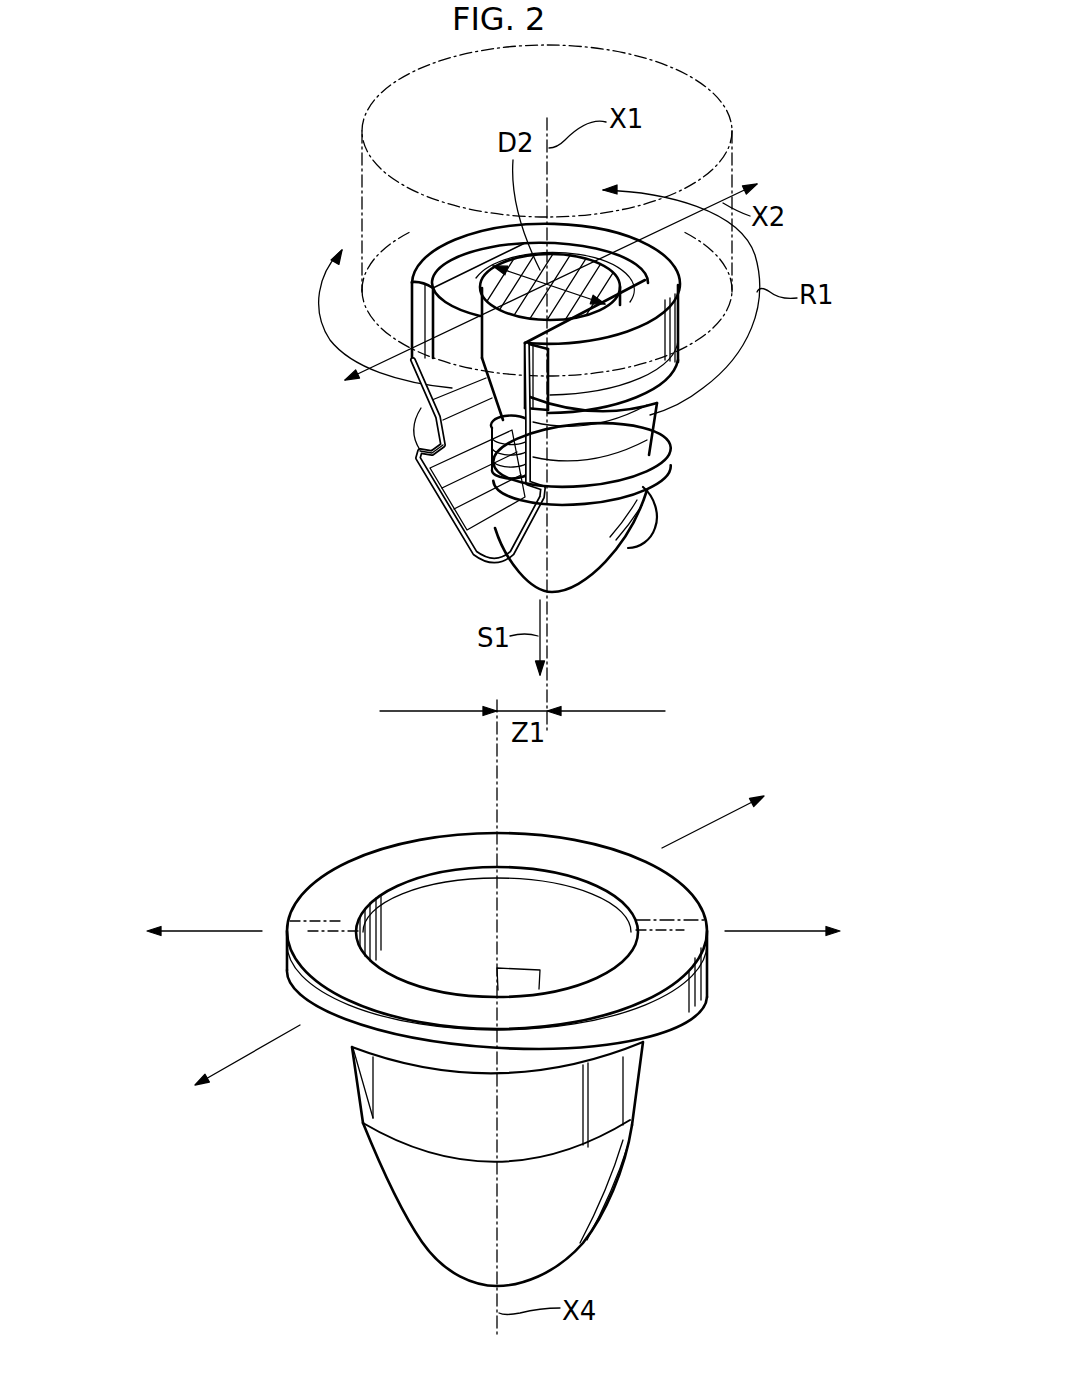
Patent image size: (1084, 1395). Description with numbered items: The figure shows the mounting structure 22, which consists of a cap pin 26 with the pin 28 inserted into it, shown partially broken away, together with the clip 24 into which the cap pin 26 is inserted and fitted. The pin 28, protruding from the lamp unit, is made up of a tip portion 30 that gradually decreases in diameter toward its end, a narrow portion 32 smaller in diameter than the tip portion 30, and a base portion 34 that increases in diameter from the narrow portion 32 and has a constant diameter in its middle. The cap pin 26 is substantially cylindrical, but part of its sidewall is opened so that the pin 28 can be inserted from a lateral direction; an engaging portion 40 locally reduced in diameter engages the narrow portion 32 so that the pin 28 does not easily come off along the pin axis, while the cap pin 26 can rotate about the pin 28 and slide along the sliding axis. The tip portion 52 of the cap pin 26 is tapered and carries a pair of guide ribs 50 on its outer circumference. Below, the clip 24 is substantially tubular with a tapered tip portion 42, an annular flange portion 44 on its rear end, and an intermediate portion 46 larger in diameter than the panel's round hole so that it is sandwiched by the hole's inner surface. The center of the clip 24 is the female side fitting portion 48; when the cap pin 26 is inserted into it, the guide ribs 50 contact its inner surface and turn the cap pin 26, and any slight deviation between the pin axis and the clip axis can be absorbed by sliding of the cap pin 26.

The mounting structure 22 is at (772, 610).
The clip 24 is at (609, 845).
The cap pin 26 is at (675, 467).
The pin 28 is at (485, 387).
The tip portion 30 is at (465, 537).
The narrow portion 32 is at (525, 494).
The base portion 34 is at (497, 332).
The engaging portion 40 is at (458, 430).
The tip portion 42 is at (413, 1232).
The flange portion 44 is at (322, 885).
The intermediate portion 46 is at (405, 1117).
The female side fitting portion 48 is at (518, 902).
The guide rib 50 is at (650, 532).
The tip portion 52 is at (505, 572).